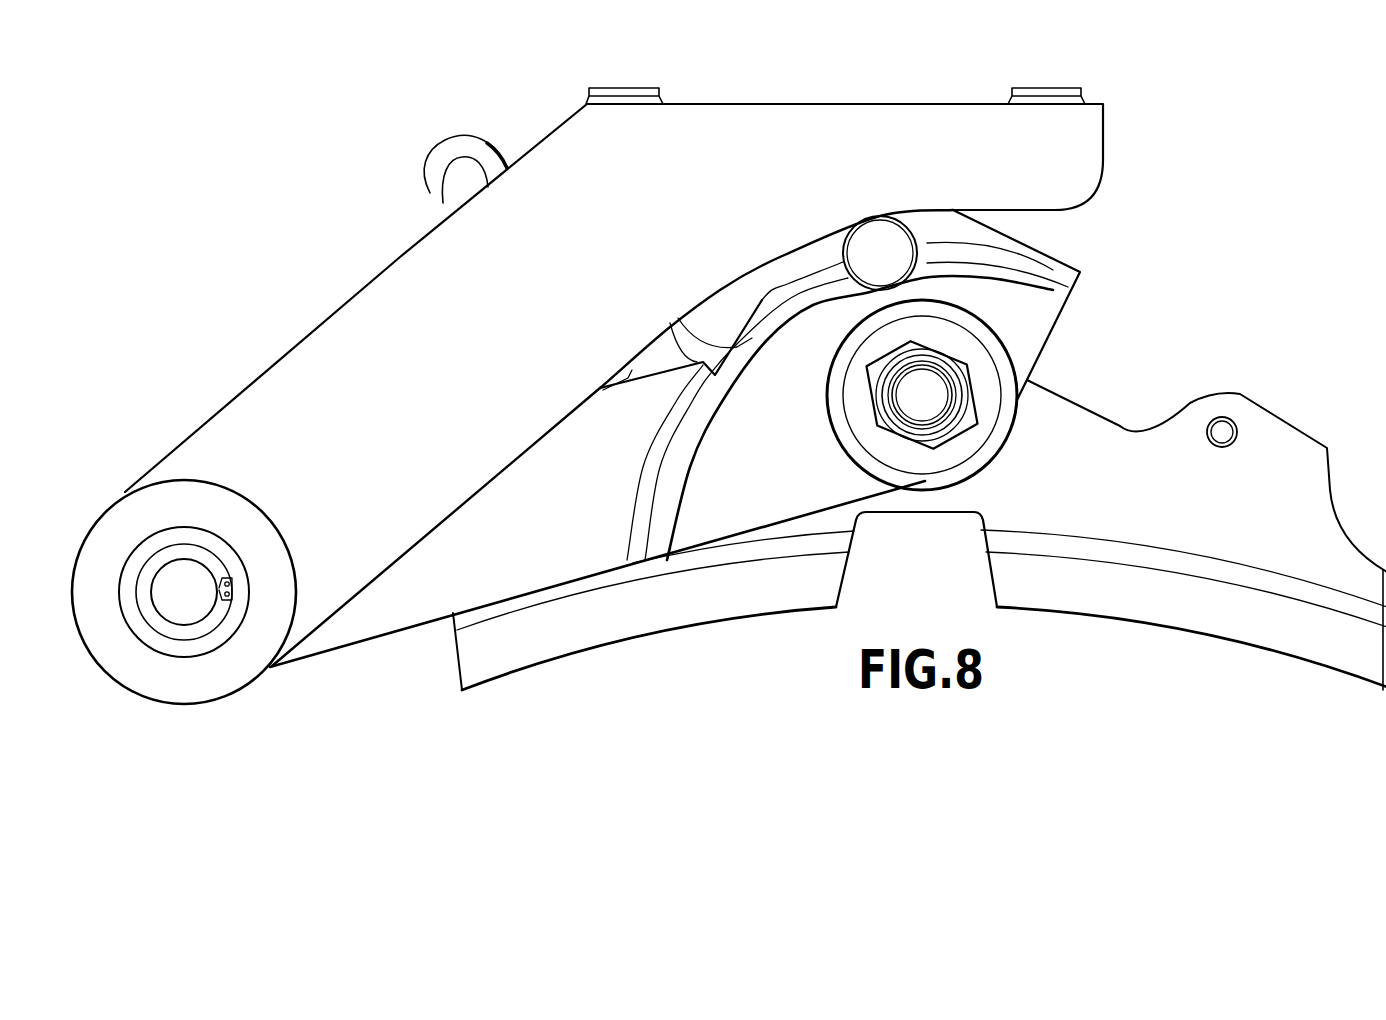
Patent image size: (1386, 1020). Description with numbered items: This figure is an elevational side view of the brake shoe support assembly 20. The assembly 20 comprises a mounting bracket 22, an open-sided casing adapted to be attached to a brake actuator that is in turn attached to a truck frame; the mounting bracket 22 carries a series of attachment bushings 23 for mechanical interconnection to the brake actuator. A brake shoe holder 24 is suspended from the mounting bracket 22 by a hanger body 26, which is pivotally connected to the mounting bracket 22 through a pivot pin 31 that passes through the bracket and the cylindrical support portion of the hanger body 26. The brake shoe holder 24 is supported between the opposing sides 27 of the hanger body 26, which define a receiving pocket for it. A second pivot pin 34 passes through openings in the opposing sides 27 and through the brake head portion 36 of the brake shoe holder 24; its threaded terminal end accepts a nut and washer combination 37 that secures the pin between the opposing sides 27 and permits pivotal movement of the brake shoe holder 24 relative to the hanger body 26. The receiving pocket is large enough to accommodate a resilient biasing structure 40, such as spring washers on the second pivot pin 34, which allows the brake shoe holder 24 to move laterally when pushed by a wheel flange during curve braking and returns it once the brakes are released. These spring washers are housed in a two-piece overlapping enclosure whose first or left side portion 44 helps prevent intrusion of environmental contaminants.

The brake shoe support assembly 20 is at (278, 162).
The mounting bracket 22 is at (293, 408).
The attachment bushings 23 is at (619, 87).
The brake shoe holder 24 is at (1110, 437).
The hanger body 26 is at (400, 630).
The opposing sides 27 is at (573, 528).
The pivot pin 31 is at (178, 607).
The second pivot pin 34 is at (925, 405).
The brake head portion 36 is at (1013, 423).
The nut and washer combination 37 is at (878, 428).
The resilient biasing structure 40 is at (1010, 348).
The first or left side portion 44 is at (967, 350).